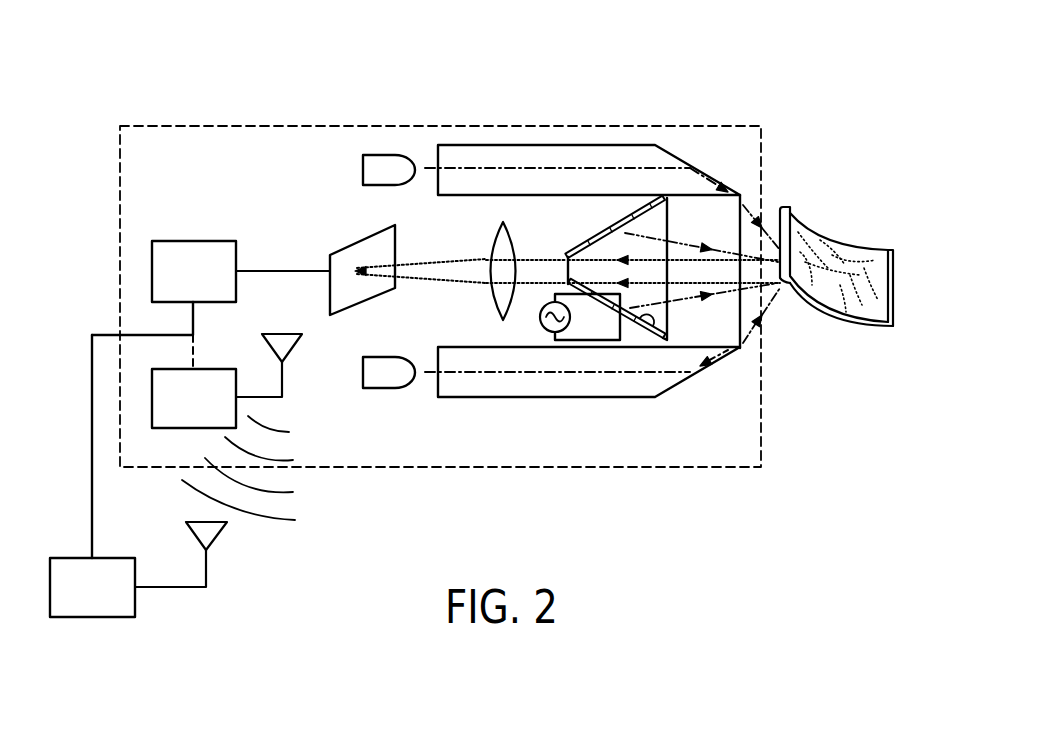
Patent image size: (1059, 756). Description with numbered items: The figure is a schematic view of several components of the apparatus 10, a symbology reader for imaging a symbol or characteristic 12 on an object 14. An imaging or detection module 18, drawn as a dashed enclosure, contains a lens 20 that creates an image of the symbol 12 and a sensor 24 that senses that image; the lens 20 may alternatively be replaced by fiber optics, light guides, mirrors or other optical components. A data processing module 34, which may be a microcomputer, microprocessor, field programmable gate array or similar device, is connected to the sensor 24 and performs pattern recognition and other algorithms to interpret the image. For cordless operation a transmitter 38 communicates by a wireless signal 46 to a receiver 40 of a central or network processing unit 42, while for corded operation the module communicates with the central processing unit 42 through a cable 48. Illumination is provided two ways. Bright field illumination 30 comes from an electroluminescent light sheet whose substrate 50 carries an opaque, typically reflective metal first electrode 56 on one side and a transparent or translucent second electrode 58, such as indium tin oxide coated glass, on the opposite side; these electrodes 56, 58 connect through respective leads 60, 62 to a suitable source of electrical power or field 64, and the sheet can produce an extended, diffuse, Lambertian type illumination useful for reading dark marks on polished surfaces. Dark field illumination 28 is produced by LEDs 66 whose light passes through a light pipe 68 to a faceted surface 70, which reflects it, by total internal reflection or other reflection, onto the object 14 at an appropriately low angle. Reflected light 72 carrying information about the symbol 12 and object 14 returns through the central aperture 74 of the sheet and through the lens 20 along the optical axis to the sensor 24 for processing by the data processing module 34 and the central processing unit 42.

The apparatus 10 is at (447, 60).
The symbol or characteristic 12 is at (830, 268).
The object 14 is at (893, 273).
The imaging or detection module 18 is at (86, 229).
The lens 20 is at (483, 241).
The sensor 24 is at (348, 248).
The dark field illumination 28 is at (745, 212).
The bright field illumination 30 is at (740, 330).
The data processing module 34 is at (180, 241).
The transmitter 38 is at (152, 397).
The receiver 40 is at (180, 588).
The central or network processing unit 42 is at (80, 618).
The wireless signal 46 is at (273, 522).
The cable 48 is at (90, 518).
The substrate 50 is at (670, 318).
The first electrode 56 is at (610, 232).
The second electrode 58 is at (655, 332).
The lead 60 is at (575, 296).
The lead 62 is at (572, 285).
The source of electrical power/field 64 is at (538, 316).
The LEDs 66 is at (392, 155).
The light pipe 68 is at (540, 145).
The faceted surface 70 is at (655, 146).
The reflected light 72 is at (688, 260).
The central aperture 74 is at (552, 268).